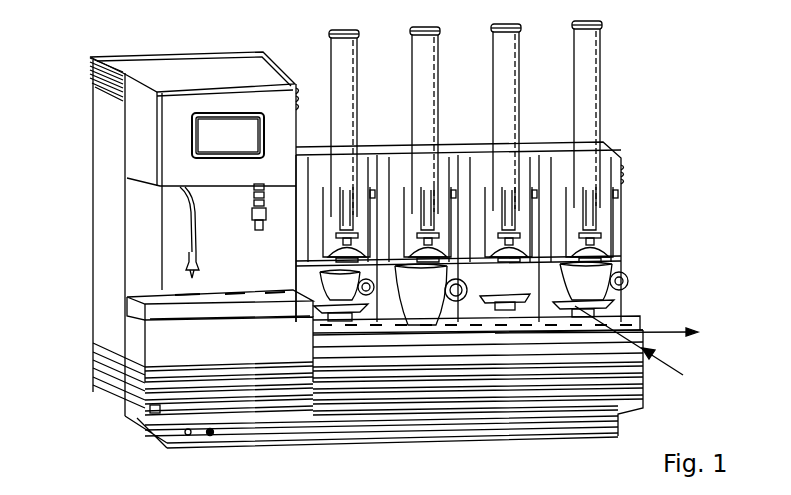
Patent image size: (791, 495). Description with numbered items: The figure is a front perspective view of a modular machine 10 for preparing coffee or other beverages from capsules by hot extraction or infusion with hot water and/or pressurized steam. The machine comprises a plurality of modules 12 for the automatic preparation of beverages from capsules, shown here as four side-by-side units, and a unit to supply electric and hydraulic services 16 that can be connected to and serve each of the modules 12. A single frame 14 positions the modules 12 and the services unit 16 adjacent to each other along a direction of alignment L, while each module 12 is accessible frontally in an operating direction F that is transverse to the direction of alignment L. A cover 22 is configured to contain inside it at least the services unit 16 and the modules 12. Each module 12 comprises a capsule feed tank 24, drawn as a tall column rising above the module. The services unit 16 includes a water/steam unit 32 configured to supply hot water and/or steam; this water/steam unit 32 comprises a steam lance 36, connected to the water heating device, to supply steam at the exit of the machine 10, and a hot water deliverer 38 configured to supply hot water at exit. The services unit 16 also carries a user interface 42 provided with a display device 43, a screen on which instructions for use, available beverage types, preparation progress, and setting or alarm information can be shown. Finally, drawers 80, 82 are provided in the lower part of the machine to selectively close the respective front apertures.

The modular machine 10 is at (684, 88).
The module for the automatic preparation of beverages from capsules 12 is at (319, 197).
The single frame 14 is at (567, 448).
The unit to supply electric and hydraulic services 16 is at (215, 66).
The cover 22 is at (78, 72).
The capsule feed tank 24 is at (346, 58).
The water/steam unit 32 is at (160, 266).
The steam lance 36 is at (192, 228).
The hot water deliverer 38 is at (257, 230).
The user interface 42 is at (180, 138).
The display device 43 is at (229, 143).
The drawer 80 is at (238, 347).
The drawer 82 is at (454, 380).
The direction of alignment L is at (668, 331).
The operating direction F is at (668, 365).